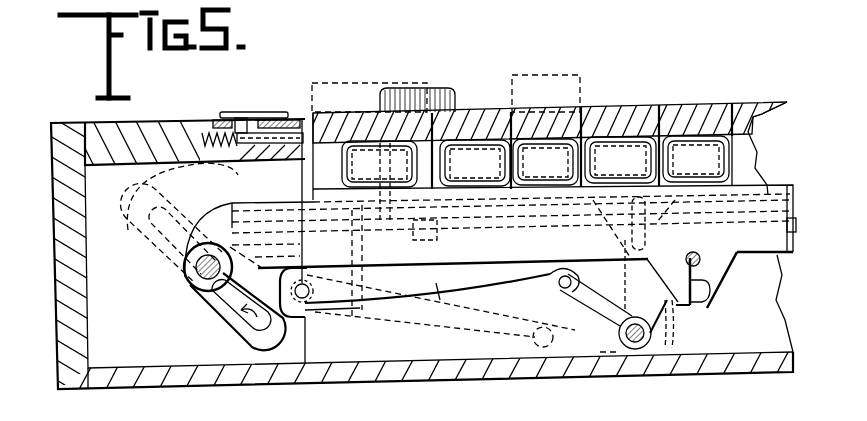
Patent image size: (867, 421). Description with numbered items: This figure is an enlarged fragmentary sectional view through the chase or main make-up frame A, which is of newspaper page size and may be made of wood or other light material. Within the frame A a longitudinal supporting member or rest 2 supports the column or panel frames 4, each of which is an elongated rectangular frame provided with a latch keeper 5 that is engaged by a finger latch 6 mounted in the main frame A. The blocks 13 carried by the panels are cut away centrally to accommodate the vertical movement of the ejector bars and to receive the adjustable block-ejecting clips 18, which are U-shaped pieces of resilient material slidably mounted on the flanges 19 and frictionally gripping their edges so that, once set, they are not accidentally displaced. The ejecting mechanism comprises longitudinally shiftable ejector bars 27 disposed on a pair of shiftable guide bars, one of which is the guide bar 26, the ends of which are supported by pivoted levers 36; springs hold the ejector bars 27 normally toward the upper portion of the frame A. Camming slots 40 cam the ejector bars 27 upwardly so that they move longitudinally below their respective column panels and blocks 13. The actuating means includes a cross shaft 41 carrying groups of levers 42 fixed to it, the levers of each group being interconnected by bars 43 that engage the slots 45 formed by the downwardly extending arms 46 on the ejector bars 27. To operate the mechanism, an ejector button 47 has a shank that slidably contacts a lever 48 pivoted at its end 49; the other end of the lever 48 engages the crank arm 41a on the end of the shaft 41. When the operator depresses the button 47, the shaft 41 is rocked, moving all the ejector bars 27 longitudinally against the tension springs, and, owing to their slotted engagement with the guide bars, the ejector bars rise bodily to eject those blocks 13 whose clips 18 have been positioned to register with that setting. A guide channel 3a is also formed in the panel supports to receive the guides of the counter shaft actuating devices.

The main make-up frame A is at (52, 270).
The longitudinal supporting member 2 is at (240, 202).
The guide channel 3a is at (507, 223).
The column or panel frame 4 is at (328, 125).
The latch keeper 5 is at (300, 118).
The finger latch 6 is at (252, 124).
The block 13 is at (362, 128).
The block-ejecting clip 18 is at (535, 161).
The flange 19 is at (400, 135).
The shiftable guide bar 26 is at (193, 290).
The ejector bar 27 is at (528, 262).
The pivoted lever 36 is at (368, 310).
The camming slot 40 is at (244, 328).
The cross shaft 41 is at (638, 348).
The crank arm 41a is at (598, 312).
The lever 42 is at (670, 348).
The bar 43 is at (697, 262).
The slot 45 is at (703, 286).
The downwardly extending arm 46 is at (683, 305).
The ejector button 47 is at (440, 138).
The lever 48 is at (443, 285).
The pivot end 49 is at (308, 300).